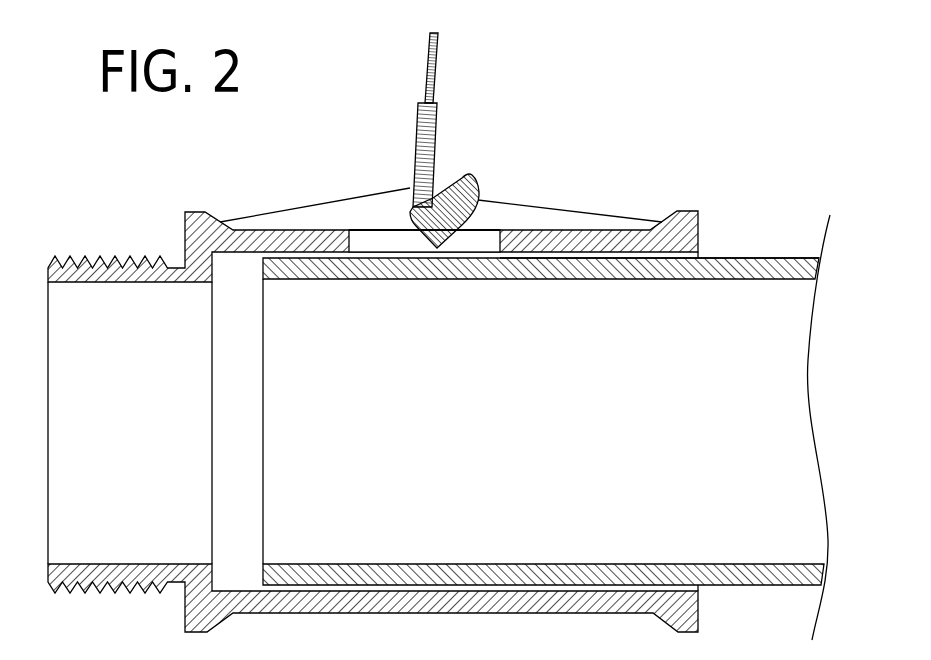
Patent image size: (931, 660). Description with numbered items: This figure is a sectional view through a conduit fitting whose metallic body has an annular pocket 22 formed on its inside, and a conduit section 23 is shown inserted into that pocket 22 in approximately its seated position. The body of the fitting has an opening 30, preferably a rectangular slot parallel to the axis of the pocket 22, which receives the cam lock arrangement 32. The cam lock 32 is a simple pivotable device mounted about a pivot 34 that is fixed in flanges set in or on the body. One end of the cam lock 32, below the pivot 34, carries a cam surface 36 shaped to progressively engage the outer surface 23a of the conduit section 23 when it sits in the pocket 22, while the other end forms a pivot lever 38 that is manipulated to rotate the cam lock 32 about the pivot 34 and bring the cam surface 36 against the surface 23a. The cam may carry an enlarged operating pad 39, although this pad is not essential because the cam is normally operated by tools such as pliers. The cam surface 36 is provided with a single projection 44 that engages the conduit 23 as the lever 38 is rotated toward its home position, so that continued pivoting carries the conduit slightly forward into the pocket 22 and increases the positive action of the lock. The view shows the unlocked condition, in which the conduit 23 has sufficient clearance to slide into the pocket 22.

The annular pocket 22 is at (236, 280).
The conduit section 23 is at (780, 260).
The outer surface of conduit section 23a is at (733, 258).
The opening 30 is at (368, 242).
The cam lock arrangement 32 is at (459, 137).
The pivot 34 is at (408, 210).
The cam surface 36 is at (477, 187).
The pivot lever 38 is at (416, 146).
The operating pad 39 is at (428, 37).
The projection 44 is at (482, 222).